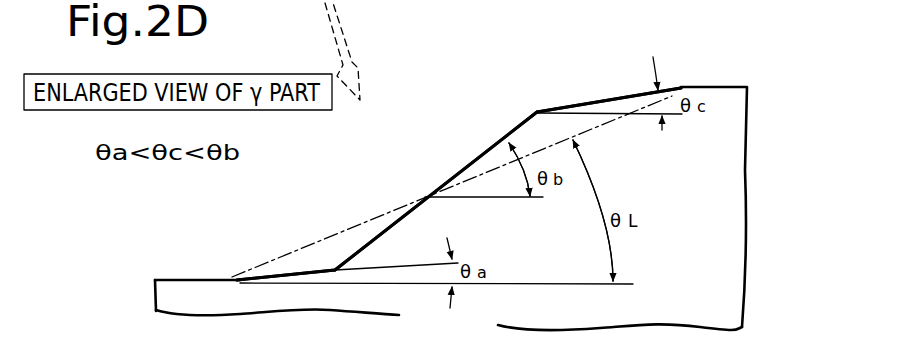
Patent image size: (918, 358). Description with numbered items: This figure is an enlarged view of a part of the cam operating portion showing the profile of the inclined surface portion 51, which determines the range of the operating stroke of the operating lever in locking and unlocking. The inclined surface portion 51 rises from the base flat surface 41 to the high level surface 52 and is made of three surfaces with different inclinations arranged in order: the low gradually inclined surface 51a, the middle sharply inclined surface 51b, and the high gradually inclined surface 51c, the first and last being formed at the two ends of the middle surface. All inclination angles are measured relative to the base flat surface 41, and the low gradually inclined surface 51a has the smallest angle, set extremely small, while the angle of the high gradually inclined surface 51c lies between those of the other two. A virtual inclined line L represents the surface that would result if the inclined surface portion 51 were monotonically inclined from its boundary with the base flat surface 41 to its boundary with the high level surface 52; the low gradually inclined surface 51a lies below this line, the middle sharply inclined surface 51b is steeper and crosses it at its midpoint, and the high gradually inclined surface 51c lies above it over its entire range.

The base flat surface 41 is at (183, 278).
The inclined surface portion 51 is at (243, 251).
The low gradually inclined surface 51a is at (330, 265).
The middle sharply inclined surface 51b is at (335, 264).
The high gradually inclined surface 51c is at (538, 103).
The high level surface 52 is at (725, 87).
The virtual inclined line L is at (603, 123).